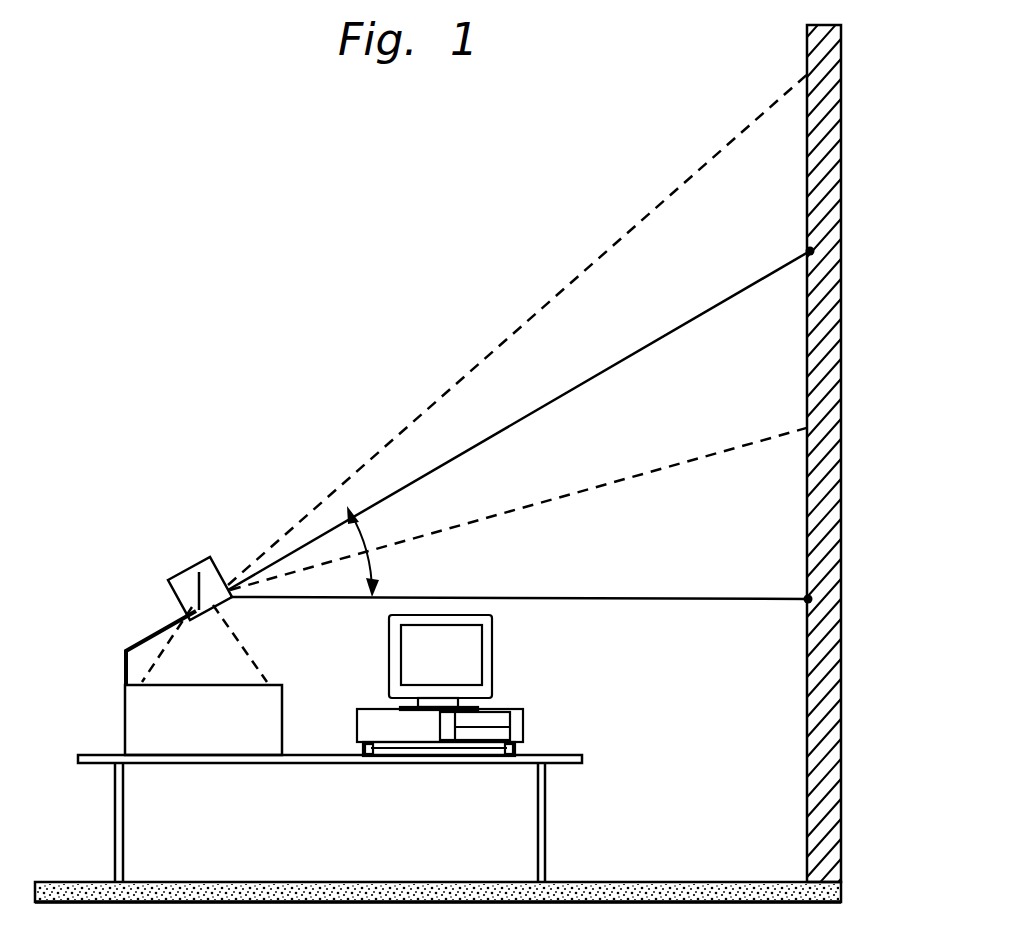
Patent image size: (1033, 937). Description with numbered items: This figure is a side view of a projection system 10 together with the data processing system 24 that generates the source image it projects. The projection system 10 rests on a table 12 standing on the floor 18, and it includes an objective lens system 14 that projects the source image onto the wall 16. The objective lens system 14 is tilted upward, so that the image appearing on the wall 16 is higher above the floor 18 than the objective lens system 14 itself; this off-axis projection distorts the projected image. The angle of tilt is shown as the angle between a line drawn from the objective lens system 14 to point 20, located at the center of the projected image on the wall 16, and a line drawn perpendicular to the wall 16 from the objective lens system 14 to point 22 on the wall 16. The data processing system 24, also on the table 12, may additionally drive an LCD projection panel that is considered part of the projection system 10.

The projection system 10 is at (282, 702).
The table 12 is at (545, 840).
The objective lens system 14 is at (198, 560).
The wall 16 is at (843, 336).
The floor 18 is at (657, 882).
The point 20 is at (809, 251).
The point 22 is at (806, 599).
The data processing system 24 is at (492, 670).